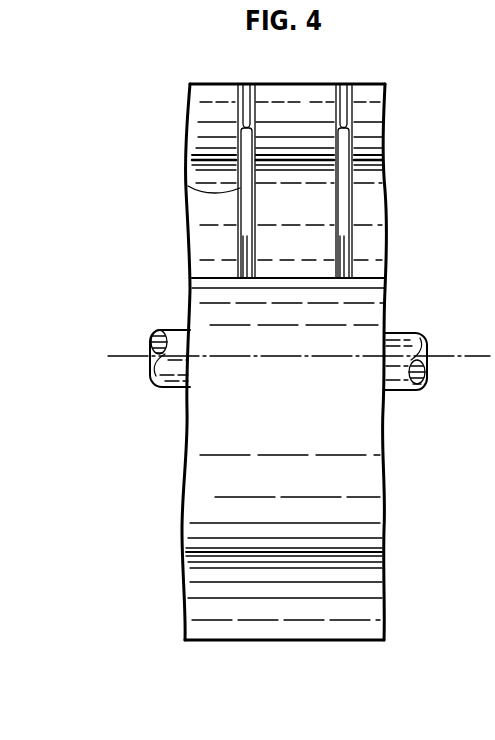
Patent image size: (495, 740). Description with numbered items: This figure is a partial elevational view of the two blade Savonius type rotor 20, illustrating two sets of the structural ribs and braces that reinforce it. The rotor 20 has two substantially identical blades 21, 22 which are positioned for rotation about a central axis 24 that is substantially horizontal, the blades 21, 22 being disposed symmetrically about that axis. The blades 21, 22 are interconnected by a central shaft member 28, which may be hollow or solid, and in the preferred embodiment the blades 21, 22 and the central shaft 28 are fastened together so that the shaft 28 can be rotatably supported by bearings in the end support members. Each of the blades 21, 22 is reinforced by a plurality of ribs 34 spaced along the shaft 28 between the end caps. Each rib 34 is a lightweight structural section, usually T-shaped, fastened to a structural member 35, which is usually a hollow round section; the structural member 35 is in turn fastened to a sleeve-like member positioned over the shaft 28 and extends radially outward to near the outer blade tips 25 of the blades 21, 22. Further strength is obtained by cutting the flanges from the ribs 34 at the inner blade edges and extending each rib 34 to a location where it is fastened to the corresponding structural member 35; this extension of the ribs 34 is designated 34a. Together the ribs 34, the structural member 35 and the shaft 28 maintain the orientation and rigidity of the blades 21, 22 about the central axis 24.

The two blade Savonius type rotor 20 is at (162, 521).
The blade 21 is at (370, 525).
The blade 22 is at (382, 157).
The central axis 24 is at (437, 352).
The outer blade tips 25 is at (360, 85).
The central shaft member 28 is at (392, 390).
The ribs 34 is at (250, 94).
The extension of the ribs 34a is at (248, 256).
The structural member 35 is at (188, 186).